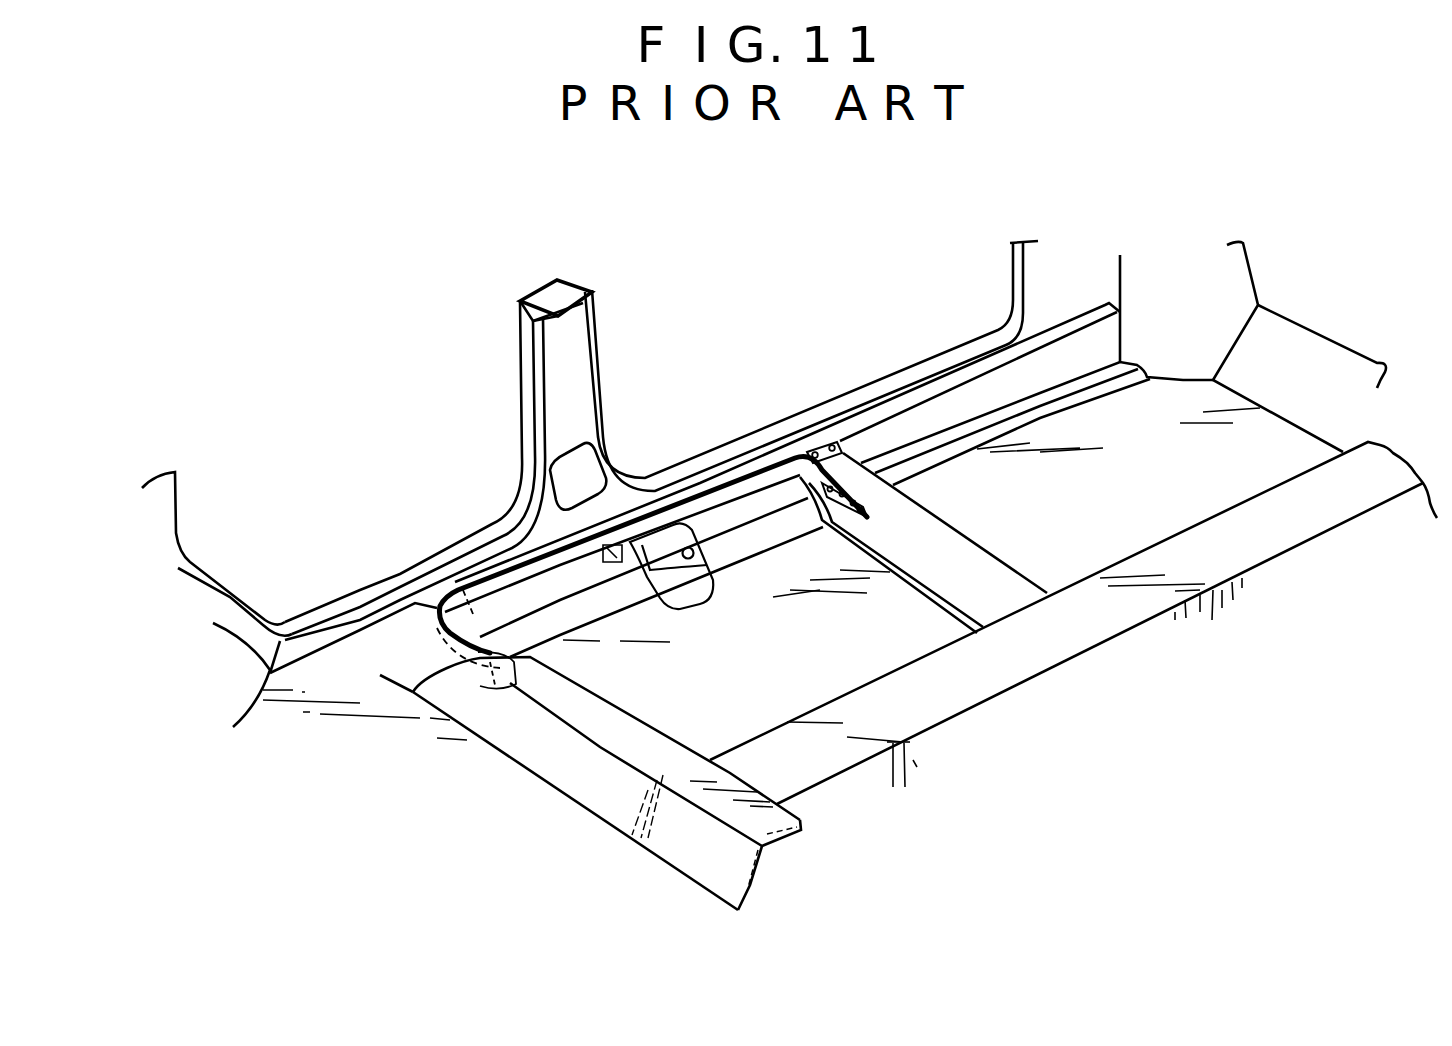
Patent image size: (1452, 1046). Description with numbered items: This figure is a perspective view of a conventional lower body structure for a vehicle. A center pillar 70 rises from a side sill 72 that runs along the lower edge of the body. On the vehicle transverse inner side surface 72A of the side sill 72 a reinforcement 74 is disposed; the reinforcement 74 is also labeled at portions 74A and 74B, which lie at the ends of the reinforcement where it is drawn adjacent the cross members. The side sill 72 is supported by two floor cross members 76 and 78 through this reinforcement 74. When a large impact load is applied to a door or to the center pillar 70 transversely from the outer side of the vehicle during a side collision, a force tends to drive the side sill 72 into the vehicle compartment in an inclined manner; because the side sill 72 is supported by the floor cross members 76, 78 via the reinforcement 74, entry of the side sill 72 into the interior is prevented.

The center pillar 70 is at (596, 368).
The side sill 72 is at (488, 503).
The vehicle transverse inner side surface 72A is at (723, 520).
The reinforcement 74 is at (727, 478).
The harness end portion 74A is at (480, 627).
The harness connector bracket 74B is at (847, 452).
The floor cross member 76 is at (648, 738).
The floor cross member 78 is at (957, 540).